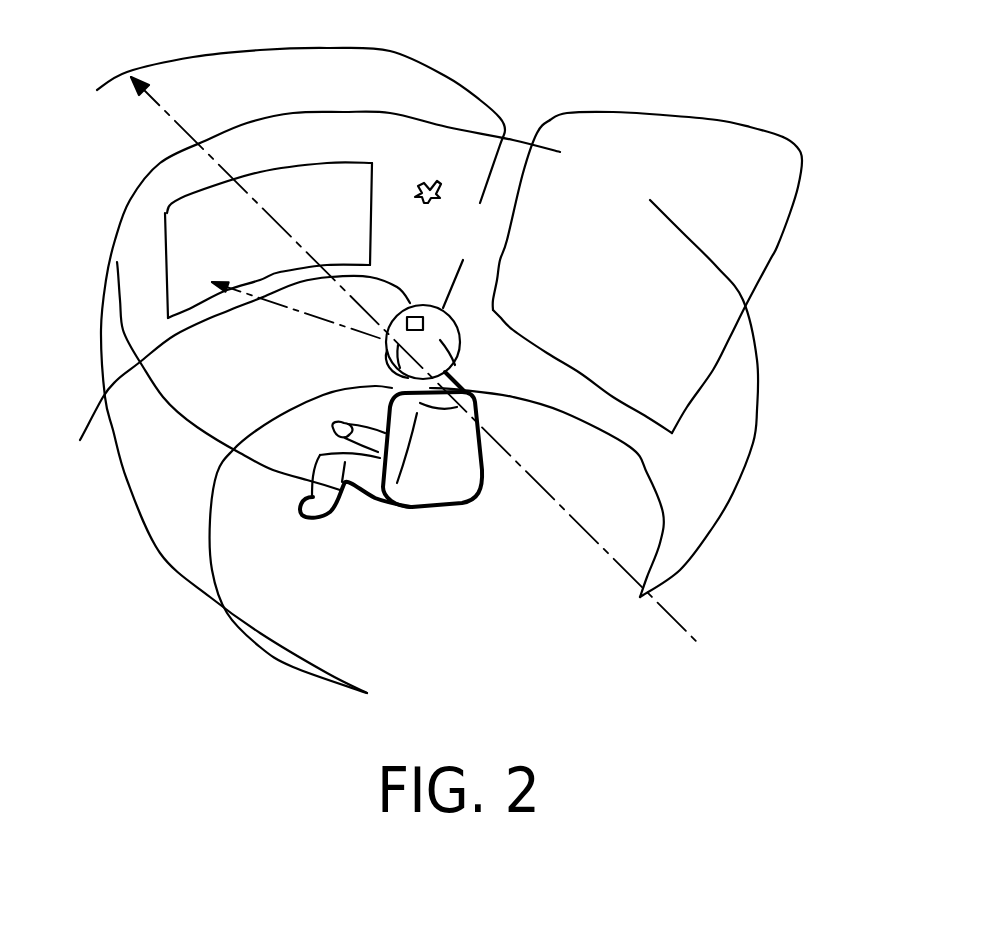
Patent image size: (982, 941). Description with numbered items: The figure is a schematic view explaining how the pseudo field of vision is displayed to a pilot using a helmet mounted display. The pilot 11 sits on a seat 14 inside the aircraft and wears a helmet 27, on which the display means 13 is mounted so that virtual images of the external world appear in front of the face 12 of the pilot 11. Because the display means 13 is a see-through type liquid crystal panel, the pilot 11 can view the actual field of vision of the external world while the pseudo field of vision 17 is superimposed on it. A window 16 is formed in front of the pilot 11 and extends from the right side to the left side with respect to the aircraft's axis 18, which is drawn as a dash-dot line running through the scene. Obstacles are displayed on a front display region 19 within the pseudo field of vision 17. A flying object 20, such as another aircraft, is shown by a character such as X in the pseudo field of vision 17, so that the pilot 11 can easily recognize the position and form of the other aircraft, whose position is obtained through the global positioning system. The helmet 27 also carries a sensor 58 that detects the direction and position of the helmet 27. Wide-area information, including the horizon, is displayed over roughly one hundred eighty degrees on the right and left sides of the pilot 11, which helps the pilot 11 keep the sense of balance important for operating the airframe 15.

The pilot 11 is at (363, 497).
The face 12 is at (383, 380).
The display means 13 is at (380, 350).
The seat 14 is at (428, 490).
The airframe 15 is at (793, 125).
The window 16 is at (382, 52).
The pseudo field of vision 17 is at (130, 203).
The aircraft's axis 18 is at (170, 115).
The front display region 19 is at (165, 277).
The flying object 20 is at (430, 180).
The helmet 27 is at (447, 352).
The sensor 58 is at (423, 323).